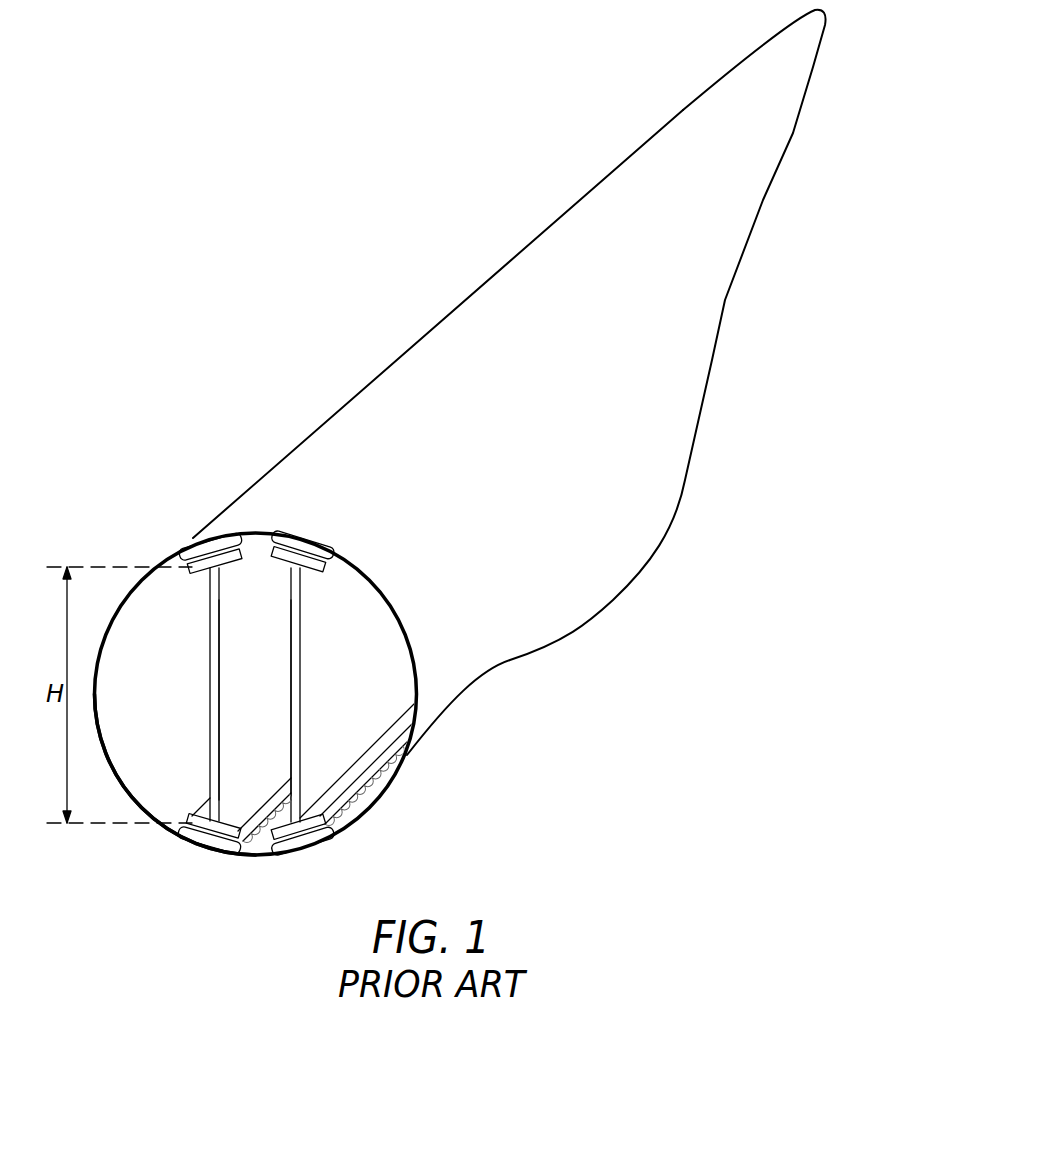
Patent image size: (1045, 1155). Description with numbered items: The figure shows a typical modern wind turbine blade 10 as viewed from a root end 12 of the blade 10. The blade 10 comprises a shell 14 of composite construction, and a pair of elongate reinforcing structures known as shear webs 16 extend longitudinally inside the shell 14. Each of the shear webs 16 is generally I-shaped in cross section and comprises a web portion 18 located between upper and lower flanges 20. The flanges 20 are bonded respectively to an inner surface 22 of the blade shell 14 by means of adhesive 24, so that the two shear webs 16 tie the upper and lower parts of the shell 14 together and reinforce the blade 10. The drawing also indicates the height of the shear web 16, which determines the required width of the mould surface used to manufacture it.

The wind turbine blade 10 is at (352, 255).
The root end 12 is at (400, 814).
The shell 14 is at (303, 459).
The shear webs 16 is at (194, 688).
The web portion 18 is at (291, 692).
The flanges 20 is at (288, 563).
The inner surface 22 is at (126, 781).
The adhesive 24 is at (214, 549).